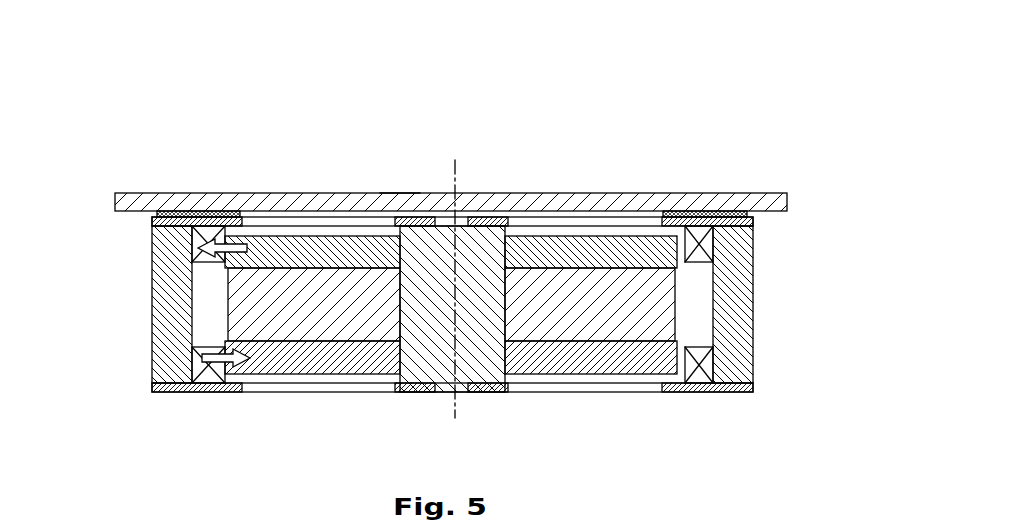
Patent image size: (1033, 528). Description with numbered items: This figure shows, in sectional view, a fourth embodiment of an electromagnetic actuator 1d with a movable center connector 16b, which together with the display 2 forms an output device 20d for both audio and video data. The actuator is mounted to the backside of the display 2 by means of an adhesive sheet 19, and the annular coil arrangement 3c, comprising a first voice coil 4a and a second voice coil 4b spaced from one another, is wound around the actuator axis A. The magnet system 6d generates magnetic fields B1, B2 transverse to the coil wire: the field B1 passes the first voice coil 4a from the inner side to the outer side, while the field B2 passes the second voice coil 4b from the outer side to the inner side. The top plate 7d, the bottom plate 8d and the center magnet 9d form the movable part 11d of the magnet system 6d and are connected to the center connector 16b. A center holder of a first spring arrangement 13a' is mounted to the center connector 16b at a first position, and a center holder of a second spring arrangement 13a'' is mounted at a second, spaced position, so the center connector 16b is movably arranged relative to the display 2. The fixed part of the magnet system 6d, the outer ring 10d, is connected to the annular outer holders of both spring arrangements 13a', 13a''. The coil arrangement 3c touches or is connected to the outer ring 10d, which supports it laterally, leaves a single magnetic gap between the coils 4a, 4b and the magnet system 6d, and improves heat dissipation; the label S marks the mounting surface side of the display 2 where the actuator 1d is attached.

The display 2 is at (210, 200).
The adhesive sheet 19 is at (167, 215).
The first spring arrangement 13a' is at (452, 186).
The second spring arrangement 13a'' is at (452, 410).
The center connector 16b is at (483, 238).
The magnet system 6d is at (549, 309).
The outer ring 10d is at (735, 370).
The movable part 11d is at (558, 304).
The top plate 7d is at (668, 257).
The center magnet 9d is at (662, 308).
The bottom plate 8d is at (660, 362).
The coil arrangement 3c is at (371, 304).
The first voice coil 4a is at (205, 240).
The second voice coil 4b is at (195, 367).
The magnetic field B1 is at (215, 250).
The magnetic field B2 is at (218, 355).
The surface S is at (392, 183).
The actuator axis A is at (440, 283).
The output device 20d is at (768, 152).
The electromagnetic actuator 1d is at (750, 418).